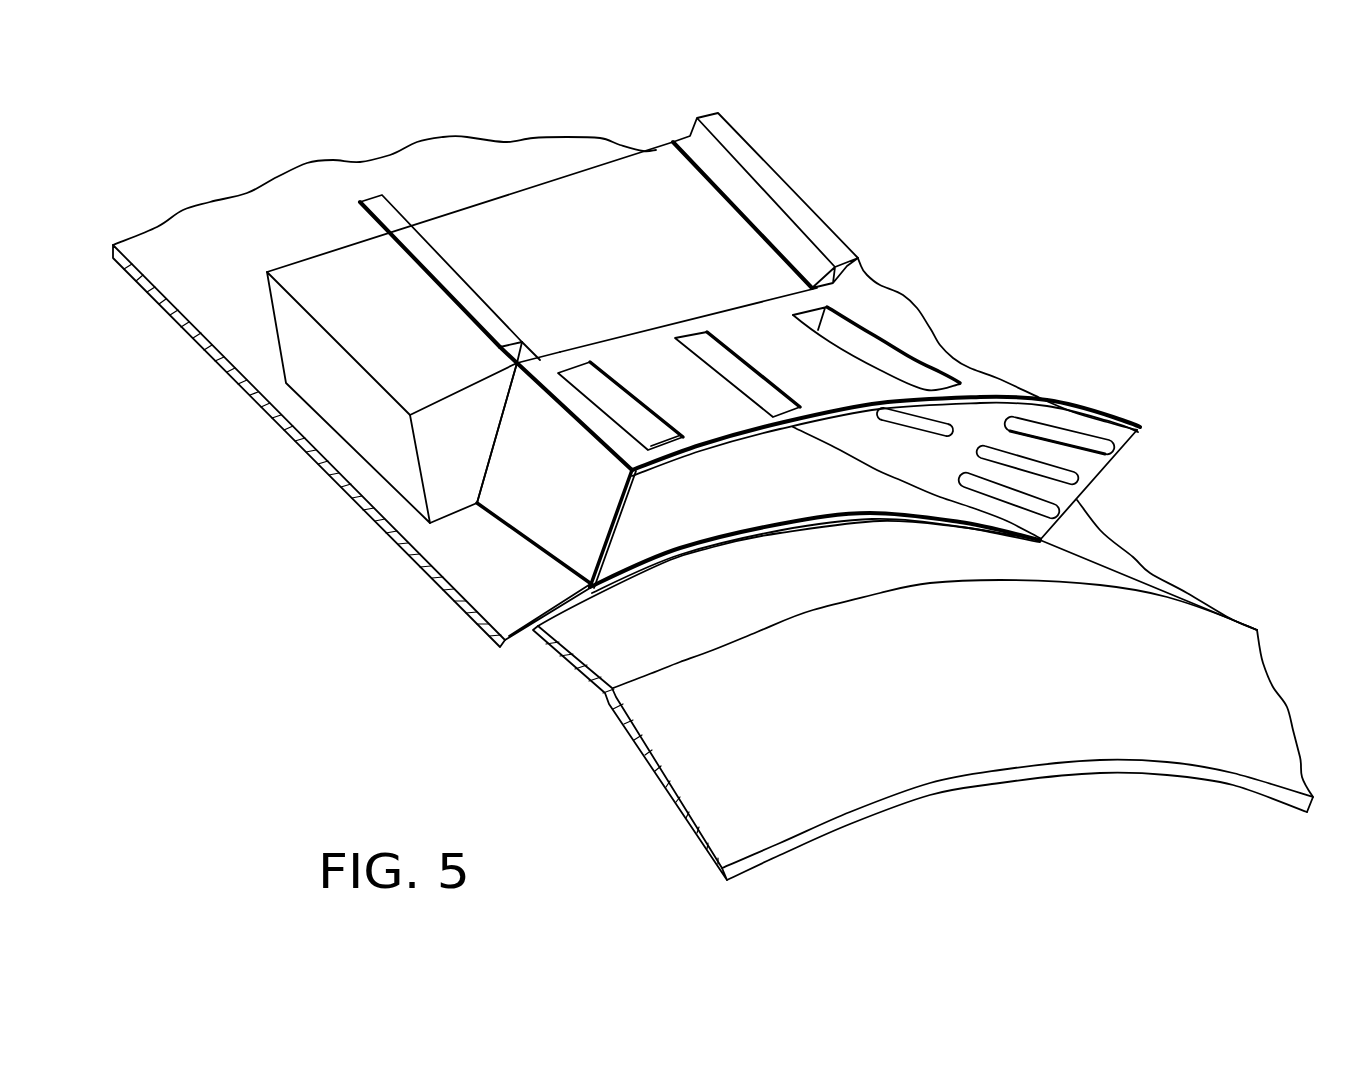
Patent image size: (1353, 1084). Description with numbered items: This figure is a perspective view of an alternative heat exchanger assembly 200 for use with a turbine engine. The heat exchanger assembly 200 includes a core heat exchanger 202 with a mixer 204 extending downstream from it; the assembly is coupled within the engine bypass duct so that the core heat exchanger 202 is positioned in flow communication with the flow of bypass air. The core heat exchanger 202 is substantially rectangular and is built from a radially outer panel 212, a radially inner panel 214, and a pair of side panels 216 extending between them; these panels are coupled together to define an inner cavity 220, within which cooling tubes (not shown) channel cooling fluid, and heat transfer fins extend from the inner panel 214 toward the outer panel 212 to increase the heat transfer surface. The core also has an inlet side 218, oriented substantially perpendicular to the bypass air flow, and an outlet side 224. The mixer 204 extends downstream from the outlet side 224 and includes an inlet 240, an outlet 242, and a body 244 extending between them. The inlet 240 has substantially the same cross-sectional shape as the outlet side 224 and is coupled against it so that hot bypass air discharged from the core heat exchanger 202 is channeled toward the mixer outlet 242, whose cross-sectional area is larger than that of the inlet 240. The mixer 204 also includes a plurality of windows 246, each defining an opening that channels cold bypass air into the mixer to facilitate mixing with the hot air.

The heat exchanger assembly 200 is at (1140, 162).
The core heat exchanger 202 is at (537, 289).
The mixer 204 is at (580, 484).
The radially outer panel 212 is at (705, 246).
The radially inner panel 214 is at (306, 469).
The side panels 216 is at (370, 409).
The inlet side 218 is at (257, 158).
The inner cavity 220 is at (530, 177).
The outlet side 224 is at (460, 526).
The inlet 240 is at (872, 301).
The outlet 242 is at (731, 498).
The body 244 is at (797, 354).
The windows 246 is at (616, 388).